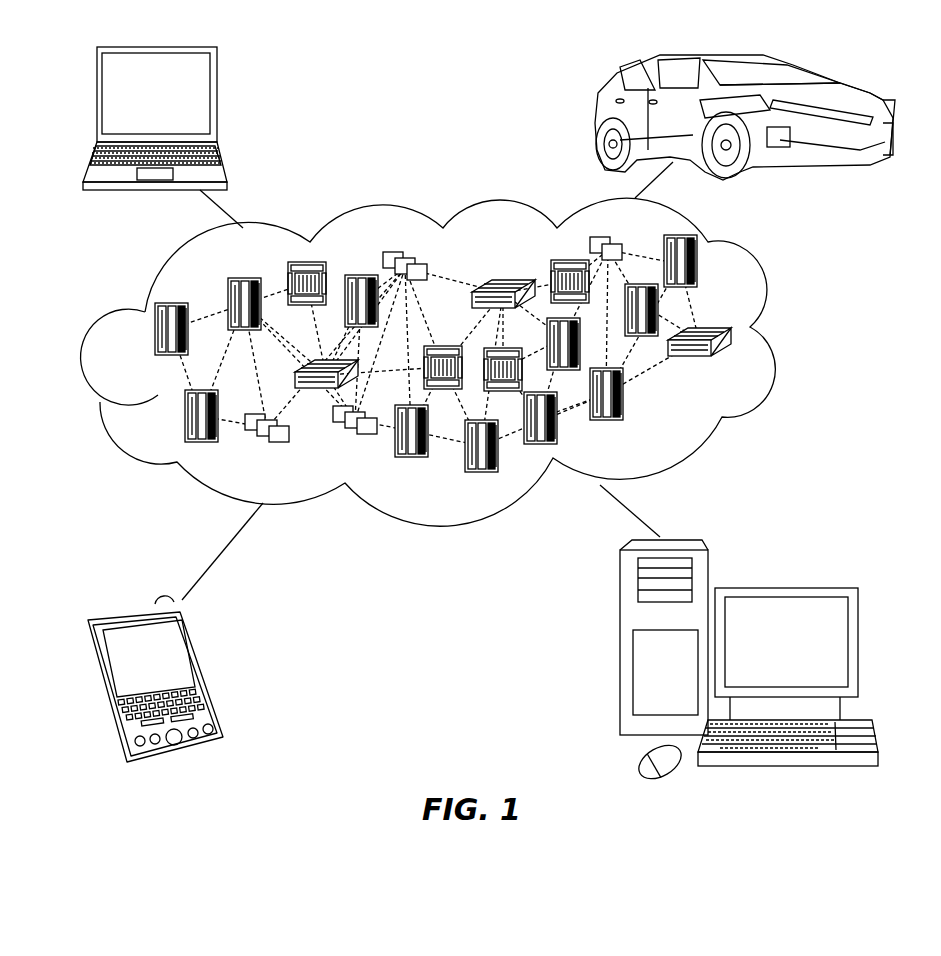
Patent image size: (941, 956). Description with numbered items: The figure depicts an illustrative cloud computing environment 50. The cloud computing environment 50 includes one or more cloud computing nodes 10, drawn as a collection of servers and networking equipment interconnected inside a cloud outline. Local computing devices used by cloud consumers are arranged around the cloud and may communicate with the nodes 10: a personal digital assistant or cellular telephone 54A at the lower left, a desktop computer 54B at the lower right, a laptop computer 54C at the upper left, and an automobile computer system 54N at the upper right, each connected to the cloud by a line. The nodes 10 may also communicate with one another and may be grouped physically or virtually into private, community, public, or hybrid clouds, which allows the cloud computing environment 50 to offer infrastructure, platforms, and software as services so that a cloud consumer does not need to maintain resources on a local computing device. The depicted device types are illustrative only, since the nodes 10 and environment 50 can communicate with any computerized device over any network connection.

The cloud computing node 10 is at (738, 364).
The cloud computing environment 50 is at (786, 336).
The personal digital assistant or cellular telephone 54A is at (205, 667).
The desktop computer 54B is at (786, 588).
The laptop computer 54C is at (217, 100).
The automobile computer system 54N is at (598, 120).